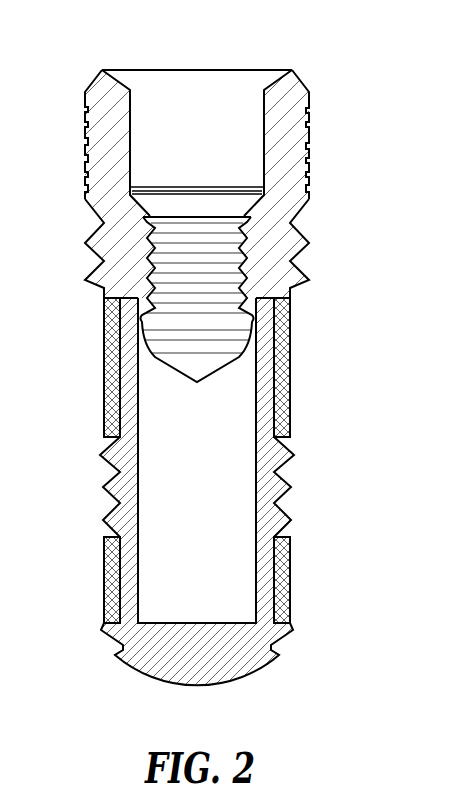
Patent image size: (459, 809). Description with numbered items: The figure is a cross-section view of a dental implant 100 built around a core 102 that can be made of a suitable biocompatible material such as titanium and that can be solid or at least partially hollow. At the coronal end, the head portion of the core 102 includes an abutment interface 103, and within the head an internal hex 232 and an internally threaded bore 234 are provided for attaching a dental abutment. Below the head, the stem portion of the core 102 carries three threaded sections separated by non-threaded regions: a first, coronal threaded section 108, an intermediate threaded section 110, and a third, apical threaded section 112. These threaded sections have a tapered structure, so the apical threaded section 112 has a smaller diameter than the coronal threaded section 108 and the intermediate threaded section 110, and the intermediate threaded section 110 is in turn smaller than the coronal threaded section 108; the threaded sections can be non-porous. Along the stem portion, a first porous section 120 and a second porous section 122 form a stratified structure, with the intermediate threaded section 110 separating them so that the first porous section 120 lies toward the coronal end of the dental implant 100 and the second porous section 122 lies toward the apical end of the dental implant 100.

The dental implant 100 is at (374, 108).
The core 102 is at (307, 178).
The abutment interface 103 is at (245, 82).
The coronal threaded section 108 is at (309, 243).
The intermediate threaded section 110 is at (294, 487).
The apical threaded section 112 is at (291, 628).
The first porous section 120 is at (283, 367).
The second porous section 122 is at (282, 571).
The internal hex 232 is at (180, 80).
The internally threaded bore 234 is at (168, 240).